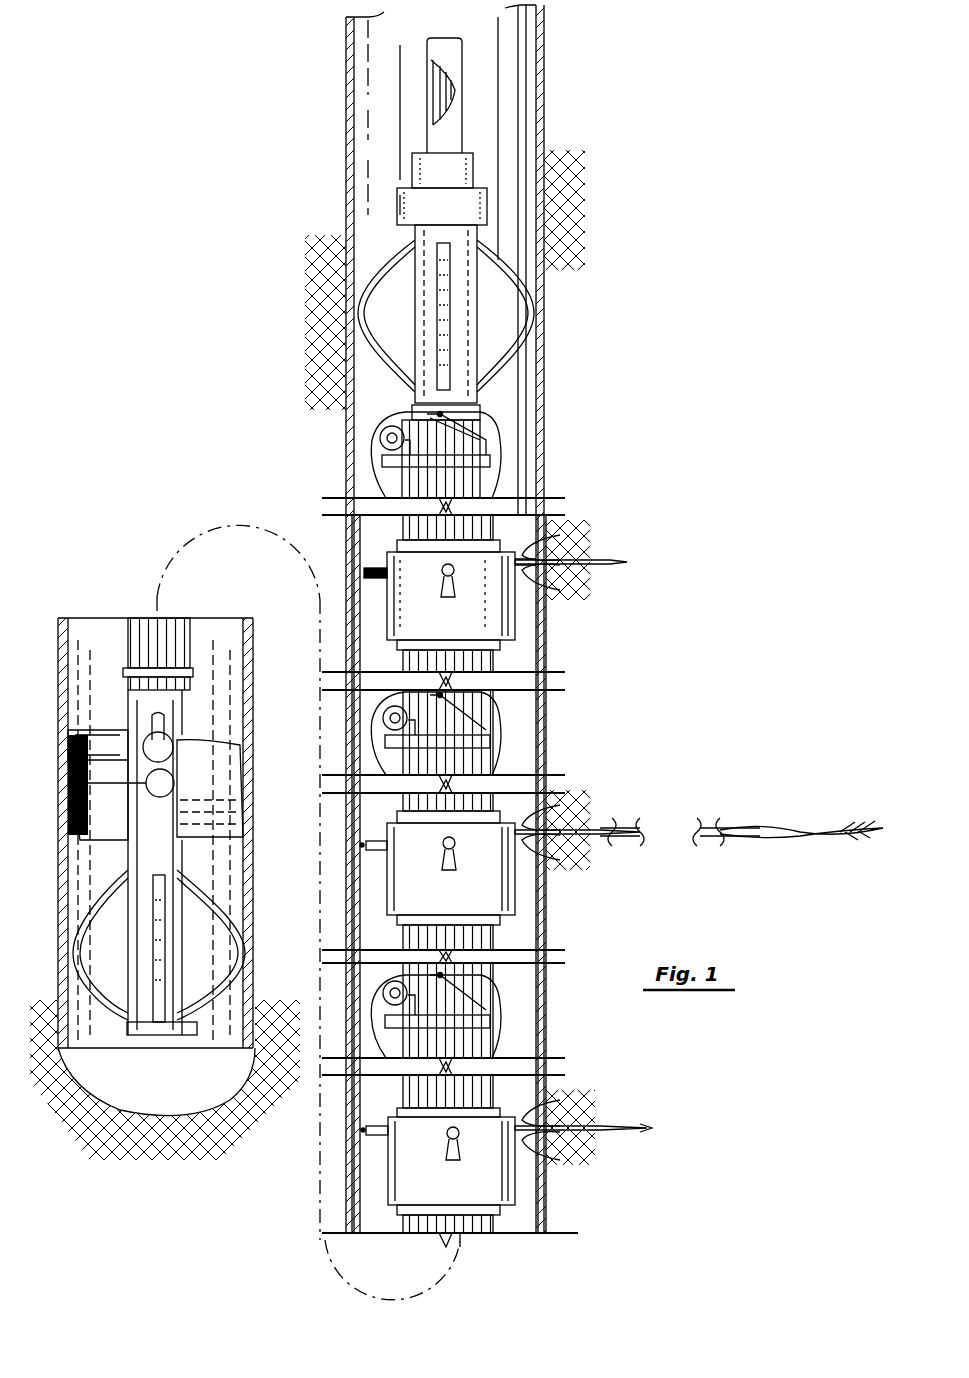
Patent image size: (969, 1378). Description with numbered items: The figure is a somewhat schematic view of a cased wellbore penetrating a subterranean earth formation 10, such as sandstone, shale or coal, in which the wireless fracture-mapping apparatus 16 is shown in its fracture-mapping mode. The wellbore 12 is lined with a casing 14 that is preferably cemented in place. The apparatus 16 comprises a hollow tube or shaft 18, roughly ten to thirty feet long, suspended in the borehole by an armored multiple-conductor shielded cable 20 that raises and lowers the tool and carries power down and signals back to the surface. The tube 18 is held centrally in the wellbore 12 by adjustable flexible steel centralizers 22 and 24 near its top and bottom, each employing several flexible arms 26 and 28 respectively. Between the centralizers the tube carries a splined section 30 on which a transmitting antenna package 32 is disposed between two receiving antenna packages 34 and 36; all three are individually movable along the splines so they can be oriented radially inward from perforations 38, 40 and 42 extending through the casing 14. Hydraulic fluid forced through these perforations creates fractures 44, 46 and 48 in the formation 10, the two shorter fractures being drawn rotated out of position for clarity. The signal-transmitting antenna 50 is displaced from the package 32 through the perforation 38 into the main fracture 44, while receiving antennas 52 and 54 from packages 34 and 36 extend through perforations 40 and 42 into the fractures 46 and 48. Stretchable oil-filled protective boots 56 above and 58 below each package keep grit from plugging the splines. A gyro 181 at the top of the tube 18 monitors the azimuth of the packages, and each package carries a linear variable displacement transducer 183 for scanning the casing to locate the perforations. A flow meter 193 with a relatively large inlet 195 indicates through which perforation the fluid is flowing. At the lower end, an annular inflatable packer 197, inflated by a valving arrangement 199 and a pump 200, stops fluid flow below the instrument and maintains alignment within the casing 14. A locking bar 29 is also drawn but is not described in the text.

The subterranean earth formation 10 is at (578, 919).
The wellbore 12 is at (370, 89).
The casing 14 is at (346, 160).
The fracture mapping apparatus 16 is at (535, 630).
The hollow tube or shaft 18 is at (432, 399).
The shielded cable 20 is at (450, 70).
The centralizer 22 is at (374, 292).
The centralizer 24 is at (84, 926).
The flexible arms 26 is at (488, 278).
The flexible arms 28 is at (212, 907).
The locking bar 29 is at (490, 462).
The splined section 30 is at (490, 728).
The transmitting antenna package 32 is at (434, 909).
The receiving antenna package 34 is at (432, 626).
The receiving antenna package 36 is at (434, 1196).
The perforation 38 is at (565, 806).
The perforation 40 is at (560, 535).
The perforation 42 is at (560, 1098).
The fracture 44 is at (798, 836).
The fracture 46 is at (548, 560).
The fracture 48 is at (600, 1126).
The signal-transmitting antenna 50 is at (565, 858).
The receiving antenna 52 is at (565, 585).
The receiving antenna 54 is at (535, 1150).
The protective boot 56 is at (500, 495).
The protective boot 58 is at (500, 665).
The gyro 181 is at (456, 218).
The linear variable displacement transducer 183 is at (370, 578).
The flow meter 193 is at (430, 573).
The inlet 195 is at (445, 596).
The inflatable packer 197 is at (215, 752).
The valving arrangement 199 is at (170, 783).
The pump 200 is at (165, 744).